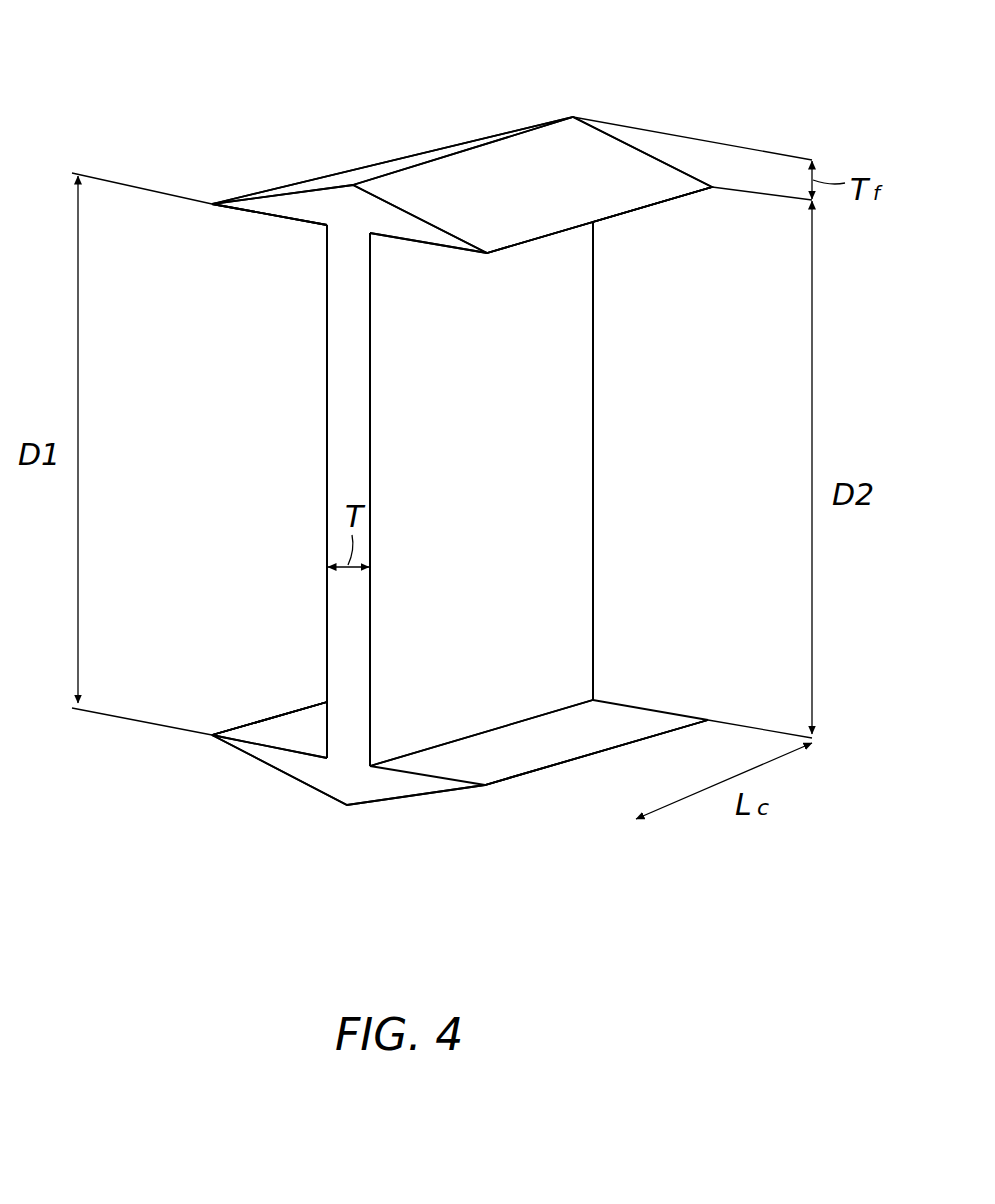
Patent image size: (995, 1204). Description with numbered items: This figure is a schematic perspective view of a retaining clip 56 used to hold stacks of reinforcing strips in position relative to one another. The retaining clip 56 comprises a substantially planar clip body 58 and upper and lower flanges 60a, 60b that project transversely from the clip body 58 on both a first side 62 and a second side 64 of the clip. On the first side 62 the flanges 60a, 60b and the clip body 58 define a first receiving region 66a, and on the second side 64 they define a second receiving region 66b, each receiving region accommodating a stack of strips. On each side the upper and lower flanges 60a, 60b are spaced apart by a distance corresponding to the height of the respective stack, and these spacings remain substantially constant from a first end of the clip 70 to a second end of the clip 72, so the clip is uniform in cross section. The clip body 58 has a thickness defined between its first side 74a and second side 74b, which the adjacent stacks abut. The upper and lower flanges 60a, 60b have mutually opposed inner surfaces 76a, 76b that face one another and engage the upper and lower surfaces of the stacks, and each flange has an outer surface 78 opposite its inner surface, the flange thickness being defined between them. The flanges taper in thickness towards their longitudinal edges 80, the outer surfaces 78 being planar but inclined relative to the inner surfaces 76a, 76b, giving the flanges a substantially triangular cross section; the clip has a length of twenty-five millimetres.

The retaining clip 56 is at (216, 77).
The clip body 58 is at (337, 418).
The upper flange 60a is at (201, 212).
The lower flange 60b is at (202, 722).
The first side 62 is at (178, 470).
The second side 64 is at (619, 467).
The first receiving region 66a is at (268, 501).
The second receiving region 66b is at (508, 541).
The first end of the clip 70 is at (380, 668).
The second end of the clip 72 is at (581, 632).
The first side of the body 74a is at (324, 353).
The second side of the body 74b is at (470, 385).
The inner surface of the upper flange 76a is at (264, 218).
The inner surface of the lower flange 76b is at (277, 737).
The outer surface of the flange 78 is at (395, 156).
The longitudinal edge 80 is at (540, 238).